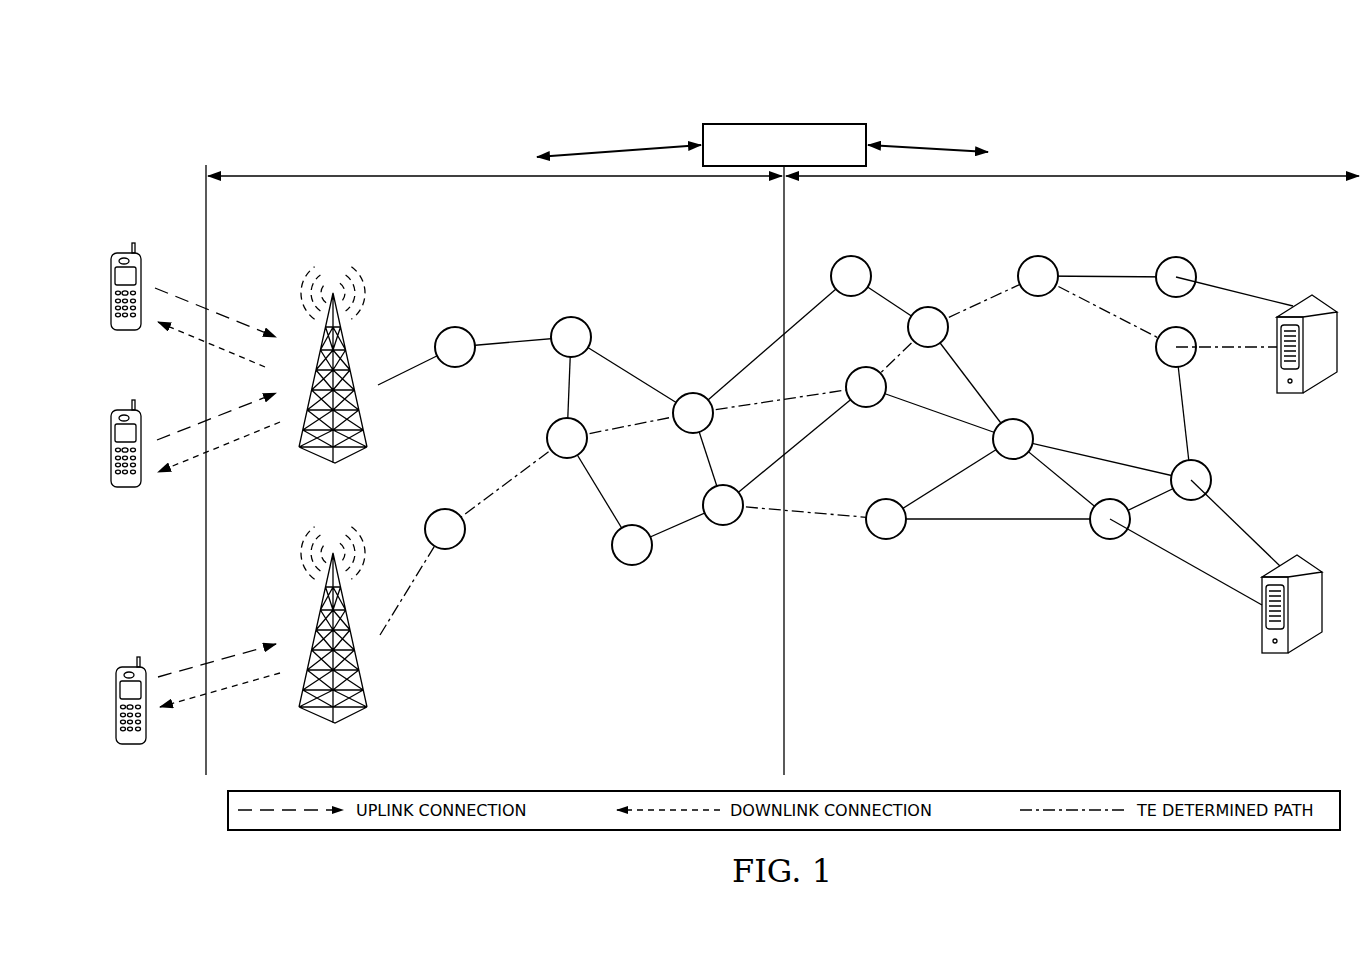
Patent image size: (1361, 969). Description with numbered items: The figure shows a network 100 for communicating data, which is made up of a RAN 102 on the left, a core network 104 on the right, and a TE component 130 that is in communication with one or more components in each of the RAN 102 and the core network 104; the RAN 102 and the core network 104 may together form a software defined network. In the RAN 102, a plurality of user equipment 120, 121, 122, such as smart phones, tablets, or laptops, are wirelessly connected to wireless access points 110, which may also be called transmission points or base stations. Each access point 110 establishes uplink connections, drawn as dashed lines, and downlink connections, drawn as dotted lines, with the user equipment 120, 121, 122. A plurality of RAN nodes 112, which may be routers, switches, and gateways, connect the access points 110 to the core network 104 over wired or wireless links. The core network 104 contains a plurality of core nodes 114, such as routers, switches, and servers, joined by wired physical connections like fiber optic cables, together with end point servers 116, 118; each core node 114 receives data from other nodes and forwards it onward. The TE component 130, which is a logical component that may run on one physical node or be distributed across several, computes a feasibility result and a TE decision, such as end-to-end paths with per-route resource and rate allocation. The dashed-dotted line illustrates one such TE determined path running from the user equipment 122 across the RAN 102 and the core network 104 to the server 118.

The network 100 is at (347, 127).
The RAN 102 is at (466, 174).
The core network 104 is at (1159, 174).
The wireless access point 110 is at (317, 450).
The RAN node 112 is at (444, 327).
The core node 114 is at (853, 256).
The end point server 116 is at (1308, 648).
The end point server 118 is at (1320, 390).
The user equipment 120 is at (123, 332).
The user equipment 121 is at (123, 489).
The user equipment 122 is at (128, 746).
The TE component 130 is at (815, 124).